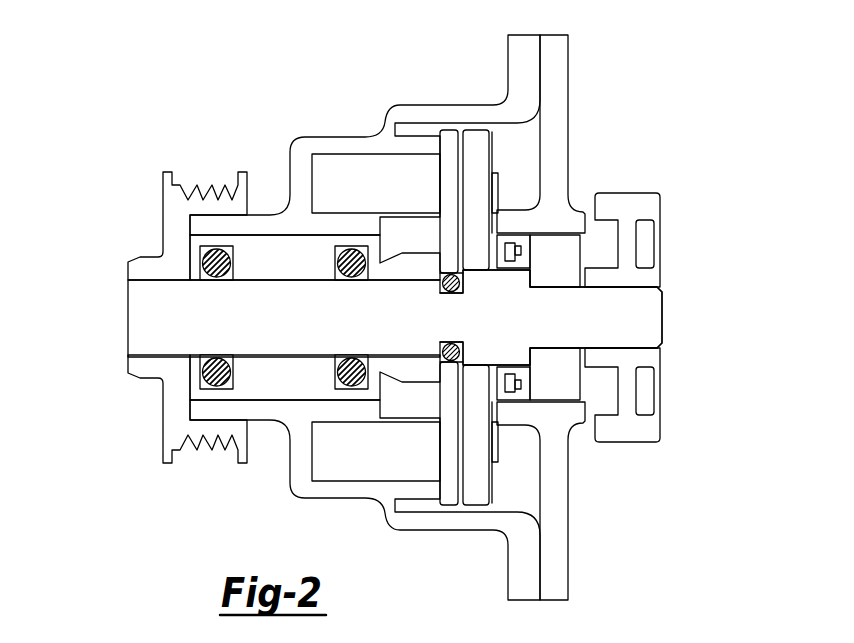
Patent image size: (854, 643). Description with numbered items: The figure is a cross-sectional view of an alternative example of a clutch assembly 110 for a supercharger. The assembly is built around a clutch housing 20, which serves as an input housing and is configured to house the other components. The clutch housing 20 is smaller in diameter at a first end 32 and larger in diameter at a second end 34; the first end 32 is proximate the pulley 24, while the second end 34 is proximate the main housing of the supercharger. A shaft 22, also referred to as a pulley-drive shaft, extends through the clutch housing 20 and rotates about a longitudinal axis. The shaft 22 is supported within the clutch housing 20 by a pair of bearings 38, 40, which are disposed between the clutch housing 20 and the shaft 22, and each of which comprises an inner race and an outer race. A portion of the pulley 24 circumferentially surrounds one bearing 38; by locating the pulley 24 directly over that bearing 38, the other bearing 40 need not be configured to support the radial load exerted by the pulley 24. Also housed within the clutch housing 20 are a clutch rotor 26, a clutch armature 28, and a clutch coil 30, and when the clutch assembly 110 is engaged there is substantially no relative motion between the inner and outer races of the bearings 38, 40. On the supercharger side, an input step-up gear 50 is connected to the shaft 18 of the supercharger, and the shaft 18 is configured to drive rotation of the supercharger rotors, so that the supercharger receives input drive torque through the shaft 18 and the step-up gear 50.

The clutch assembly 110 is at (392, 301).
The shaft 18 is at (655, 318).
The clutch housing 20 is at (507, 48).
The shaft 22 is at (150, 329).
The pulley 24 is at (165, 432).
The clutch rotor 26 is at (452, 130).
The clutch armature 28 is at (479, 508).
The clutch coil 30 is at (343, 168).
The first end 32 is at (192, 218).
The second end 34 is at (539, 36).
The bearing 38 is at (217, 270).
The bearing 40 is at (353, 370).
The input step-up gear 50 is at (611, 163).